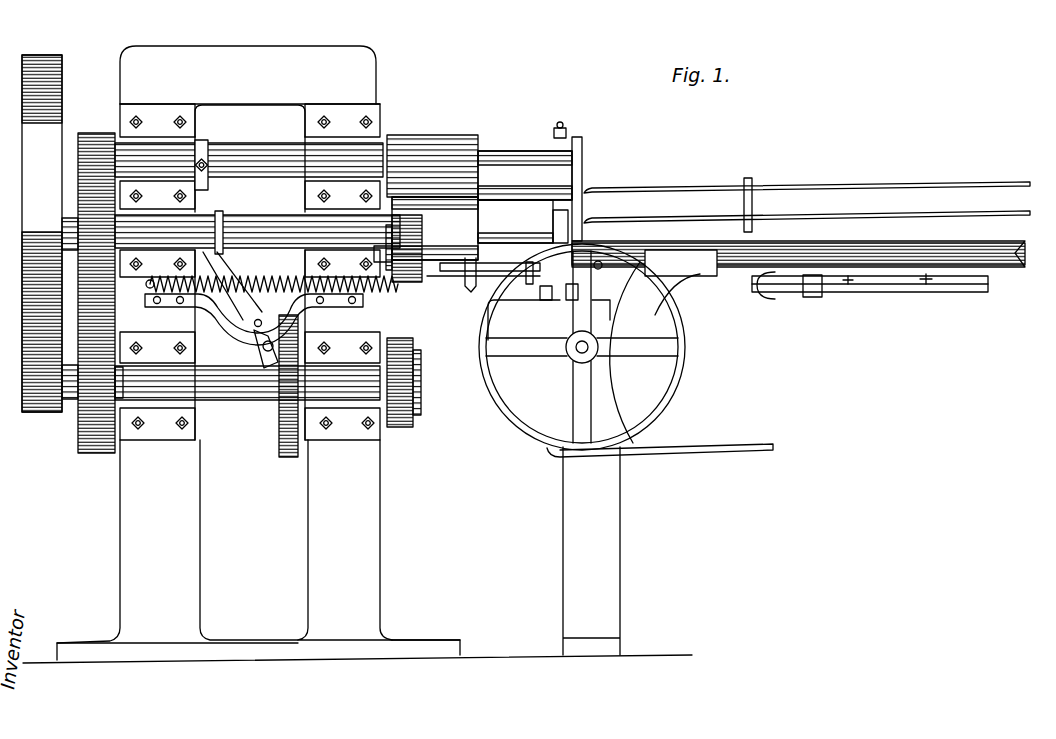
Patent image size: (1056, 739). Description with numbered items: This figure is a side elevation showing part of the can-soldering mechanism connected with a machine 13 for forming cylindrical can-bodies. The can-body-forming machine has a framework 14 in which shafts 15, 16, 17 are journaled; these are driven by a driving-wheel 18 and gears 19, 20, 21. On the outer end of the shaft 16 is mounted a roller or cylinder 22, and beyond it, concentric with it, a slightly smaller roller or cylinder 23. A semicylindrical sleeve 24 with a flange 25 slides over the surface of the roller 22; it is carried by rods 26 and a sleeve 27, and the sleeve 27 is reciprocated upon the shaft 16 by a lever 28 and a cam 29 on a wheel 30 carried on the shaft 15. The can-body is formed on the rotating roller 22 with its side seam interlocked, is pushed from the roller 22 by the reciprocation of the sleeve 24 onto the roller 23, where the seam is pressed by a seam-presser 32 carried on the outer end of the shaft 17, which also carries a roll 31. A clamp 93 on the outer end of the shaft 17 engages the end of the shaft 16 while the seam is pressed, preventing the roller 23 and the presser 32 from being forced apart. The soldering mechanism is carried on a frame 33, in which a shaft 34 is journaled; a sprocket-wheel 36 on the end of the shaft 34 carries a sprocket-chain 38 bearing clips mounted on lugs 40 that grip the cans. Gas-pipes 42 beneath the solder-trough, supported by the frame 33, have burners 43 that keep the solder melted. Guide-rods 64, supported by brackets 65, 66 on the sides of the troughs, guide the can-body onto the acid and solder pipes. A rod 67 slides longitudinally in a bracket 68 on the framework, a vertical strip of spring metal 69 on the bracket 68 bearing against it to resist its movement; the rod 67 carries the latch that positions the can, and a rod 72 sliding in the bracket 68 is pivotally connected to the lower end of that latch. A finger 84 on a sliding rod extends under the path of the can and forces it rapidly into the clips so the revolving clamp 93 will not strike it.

The machine for forming cylindrical can-bodies 13 is at (357, 354).
The framework 14 is at (177, 541).
The shaft 15 is at (232, 390).
The shaft 16 is at (278, 282).
The shaft 17 is at (247, 172).
The driving-wheel 18 is at (36, 198).
The gear 19 is at (93, 145).
The gear 20 is at (100, 295).
The gear 21 is at (104, 378).
The roller or cylinder 22 is at (435, 228).
The roller or cylinder 23 is at (523, 221).
The semicylindrical sleeve 24 is at (410, 280).
The flange 25 is at (378, 257).
The rods 26 is at (290, 236).
The sleeve 27 is at (220, 225).
The lever 28 is at (230, 278).
The cam 29 is at (262, 360).
The wheel 30 is at (284, 380).
The roll 31 is at (450, 142).
The seam-presser 32 is at (513, 178).
The frame 33 is at (591, 551).
The shaft 34 is at (576, 353).
The sprocket-wheel 36 is at (490, 329).
The sprocket-chain 38 is at (703, 449).
The lugs 40 is at (601, 269).
The gas-pipes 42 is at (975, 292).
The burners 43 is at (908, 288).
The guide-rods 64 is at (888, 203).
The bracket 65 is at (745, 200).
The bracket 66 is at (745, 232).
The rod 67 is at (450, 272).
The bracket 68 is at (566, 292).
The vertical strip of spring metal 69 is at (528, 283).
The rod 72 is at (457, 300).
The finger 84 is at (468, 292).
The clamp 93 is at (584, 172).